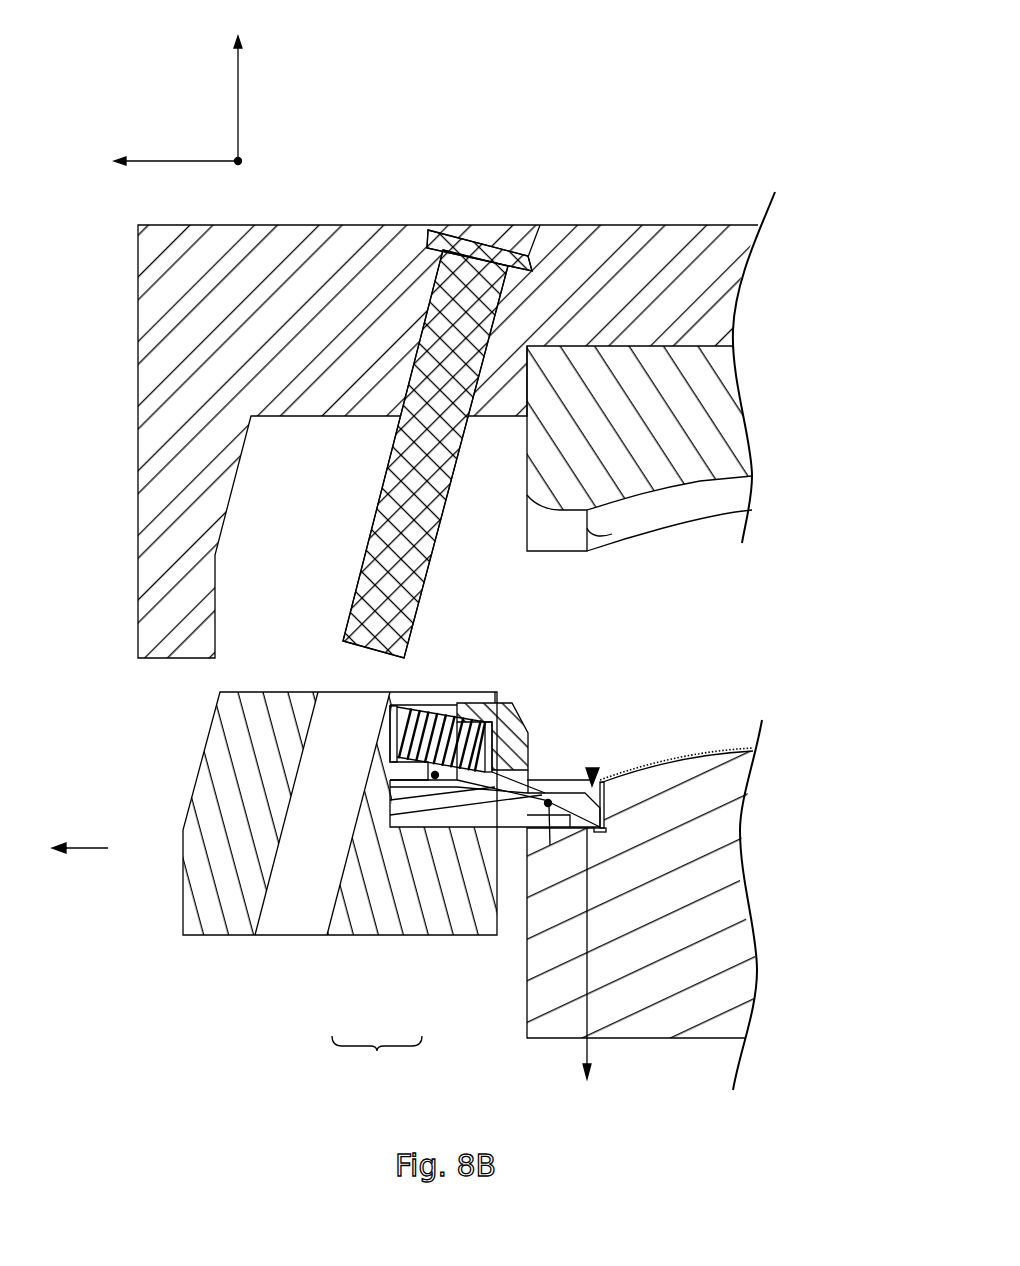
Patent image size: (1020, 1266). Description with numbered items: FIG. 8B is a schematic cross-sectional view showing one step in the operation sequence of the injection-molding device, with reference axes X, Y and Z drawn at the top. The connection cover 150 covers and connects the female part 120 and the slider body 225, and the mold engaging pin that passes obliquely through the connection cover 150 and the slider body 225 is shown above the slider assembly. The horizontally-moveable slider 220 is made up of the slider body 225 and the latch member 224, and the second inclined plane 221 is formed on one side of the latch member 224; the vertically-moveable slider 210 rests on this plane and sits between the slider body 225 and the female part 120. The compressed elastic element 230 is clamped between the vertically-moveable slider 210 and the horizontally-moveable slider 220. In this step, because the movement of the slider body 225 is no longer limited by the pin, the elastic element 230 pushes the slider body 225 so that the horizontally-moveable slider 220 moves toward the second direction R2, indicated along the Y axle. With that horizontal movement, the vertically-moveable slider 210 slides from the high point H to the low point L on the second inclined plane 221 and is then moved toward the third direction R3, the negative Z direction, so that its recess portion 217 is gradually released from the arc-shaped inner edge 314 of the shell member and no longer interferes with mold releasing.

The connection cover 150 is at (662, 243).
The female part 120 is at (697, 418).
The elastic element 230 is at (436, 712).
The vertically-moveable slider 210 is at (525, 722).
The recess portion 217 is at (592, 768).
The second inclined plane 221 is at (548, 803).
The arc-shaped inner edge 314 is at (605, 790).
The slider body 225 is at (376, 912).
The latch member 224 is at (455, 818).
The horizontally-moveable slider 220 is at (377, 1060).
The high point H is at (435, 775).
The low point L is at (550, 845).
The second direction R2 is at (102, 845).
The third direction R3 is at (587, 1048).
The X axle X is at (247, 171).
The Y axle Y is at (164, 163).
The Z axle Z is at (237, 86).